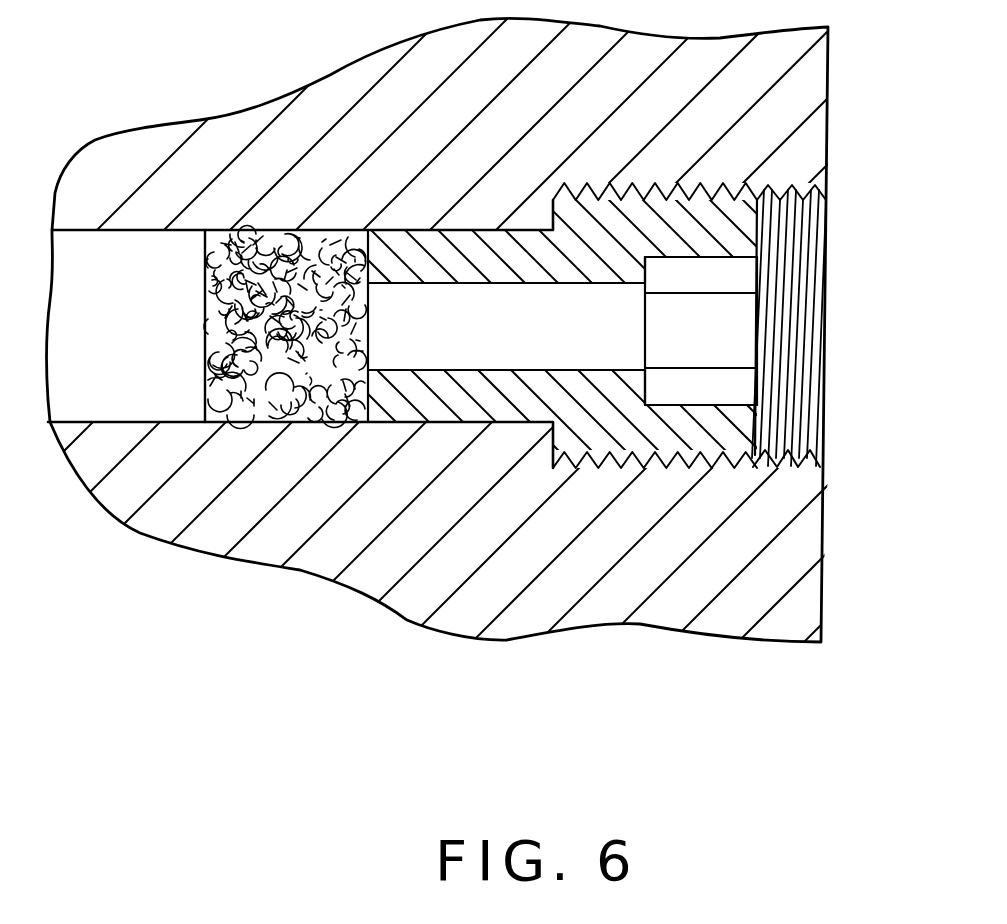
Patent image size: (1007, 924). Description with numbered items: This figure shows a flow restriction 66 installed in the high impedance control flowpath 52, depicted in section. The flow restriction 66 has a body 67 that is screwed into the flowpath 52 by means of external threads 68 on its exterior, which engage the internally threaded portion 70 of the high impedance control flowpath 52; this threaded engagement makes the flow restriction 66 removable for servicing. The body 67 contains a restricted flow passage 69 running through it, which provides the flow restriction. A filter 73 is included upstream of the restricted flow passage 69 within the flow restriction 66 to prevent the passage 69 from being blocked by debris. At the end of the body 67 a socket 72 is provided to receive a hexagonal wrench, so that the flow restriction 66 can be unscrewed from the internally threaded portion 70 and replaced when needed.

The flow restriction 66 is at (253, 87).
The body 67 is at (441, 245).
The external threads 68 is at (627, 470).
The restricted flow passage 69 is at (475, 342).
The internally threaded portion 70 is at (785, 204).
The socket 72 is at (745, 263).
The high impedance control flowpath 52 is at (112, 380).
The filter 73 is at (278, 395).